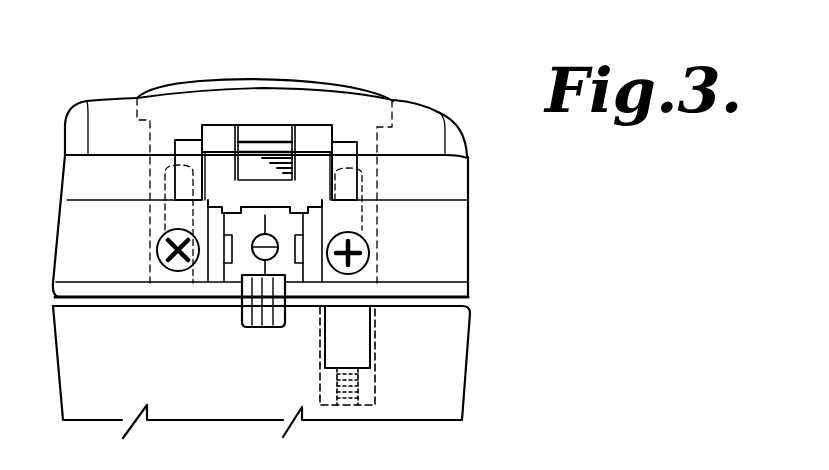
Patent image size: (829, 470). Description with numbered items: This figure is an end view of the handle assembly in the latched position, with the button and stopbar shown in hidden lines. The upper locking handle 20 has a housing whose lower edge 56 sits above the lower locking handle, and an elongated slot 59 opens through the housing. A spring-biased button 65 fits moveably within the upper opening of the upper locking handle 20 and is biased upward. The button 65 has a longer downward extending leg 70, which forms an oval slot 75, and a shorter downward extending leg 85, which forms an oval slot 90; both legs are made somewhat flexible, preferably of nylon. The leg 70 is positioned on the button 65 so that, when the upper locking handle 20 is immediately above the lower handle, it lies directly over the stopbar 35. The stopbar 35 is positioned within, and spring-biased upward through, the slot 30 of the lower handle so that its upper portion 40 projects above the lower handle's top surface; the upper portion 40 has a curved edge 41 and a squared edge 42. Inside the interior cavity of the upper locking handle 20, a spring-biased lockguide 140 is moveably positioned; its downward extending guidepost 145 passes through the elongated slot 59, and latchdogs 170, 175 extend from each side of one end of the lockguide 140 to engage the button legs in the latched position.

The upper locking handle 20 is at (117, 100).
The spring-biased button 65 is at (263, 79).
The downward extending leg 85 is at (150, 170).
The oval slot 90 is at (177, 212).
The downward extending leg 70 is at (378, 167).
The oval slot 75 is at (350, 215).
The latchdog 175 is at (221, 213).
The latchdog 170 is at (313, 218).
The guidepost 145 is at (262, 330).
The lockguide 140 is at (222, 276).
The elongated slot 59 is at (237, 300).
The curved edge 41 is at (372, 283).
The squared edge 42 is at (377, 297).
The lower edge 56 is at (472, 300).
The upper portion 40 is at (376, 316).
The stopbar 35 is at (370, 350).
The slot 30 is at (367, 380).